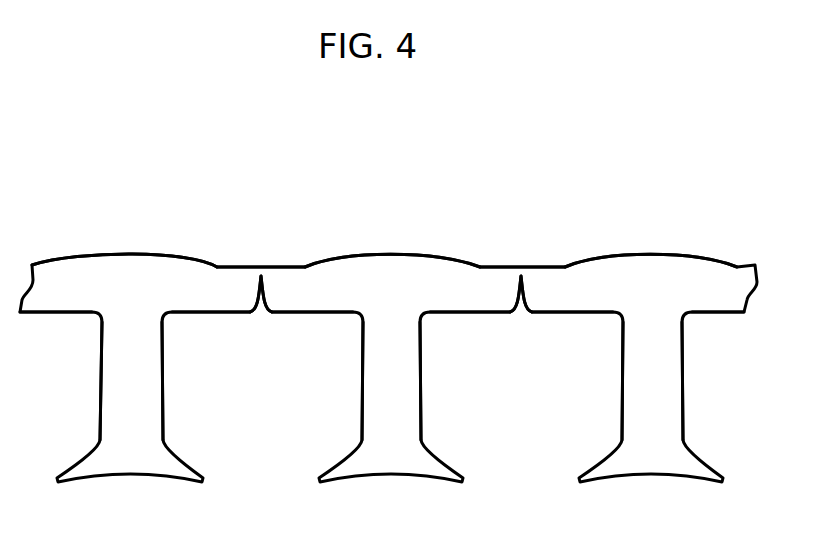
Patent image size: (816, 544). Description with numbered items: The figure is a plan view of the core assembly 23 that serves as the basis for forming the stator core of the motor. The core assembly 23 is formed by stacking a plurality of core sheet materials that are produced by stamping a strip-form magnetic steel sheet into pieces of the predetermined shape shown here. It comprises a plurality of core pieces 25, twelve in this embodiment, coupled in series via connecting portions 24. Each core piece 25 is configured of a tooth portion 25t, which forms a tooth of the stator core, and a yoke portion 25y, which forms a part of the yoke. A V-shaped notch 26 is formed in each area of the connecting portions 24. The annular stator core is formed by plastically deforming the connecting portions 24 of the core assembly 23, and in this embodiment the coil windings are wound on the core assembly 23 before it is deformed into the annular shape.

The core assembly 23 is at (56, 256).
The connecting portion 24 is at (264, 265).
The core piece 25 is at (138, 253).
The yoke portion 25y is at (155, 287).
The tooth portion 25t is at (140, 390).
The V-shaped notch 26 is at (260, 295).